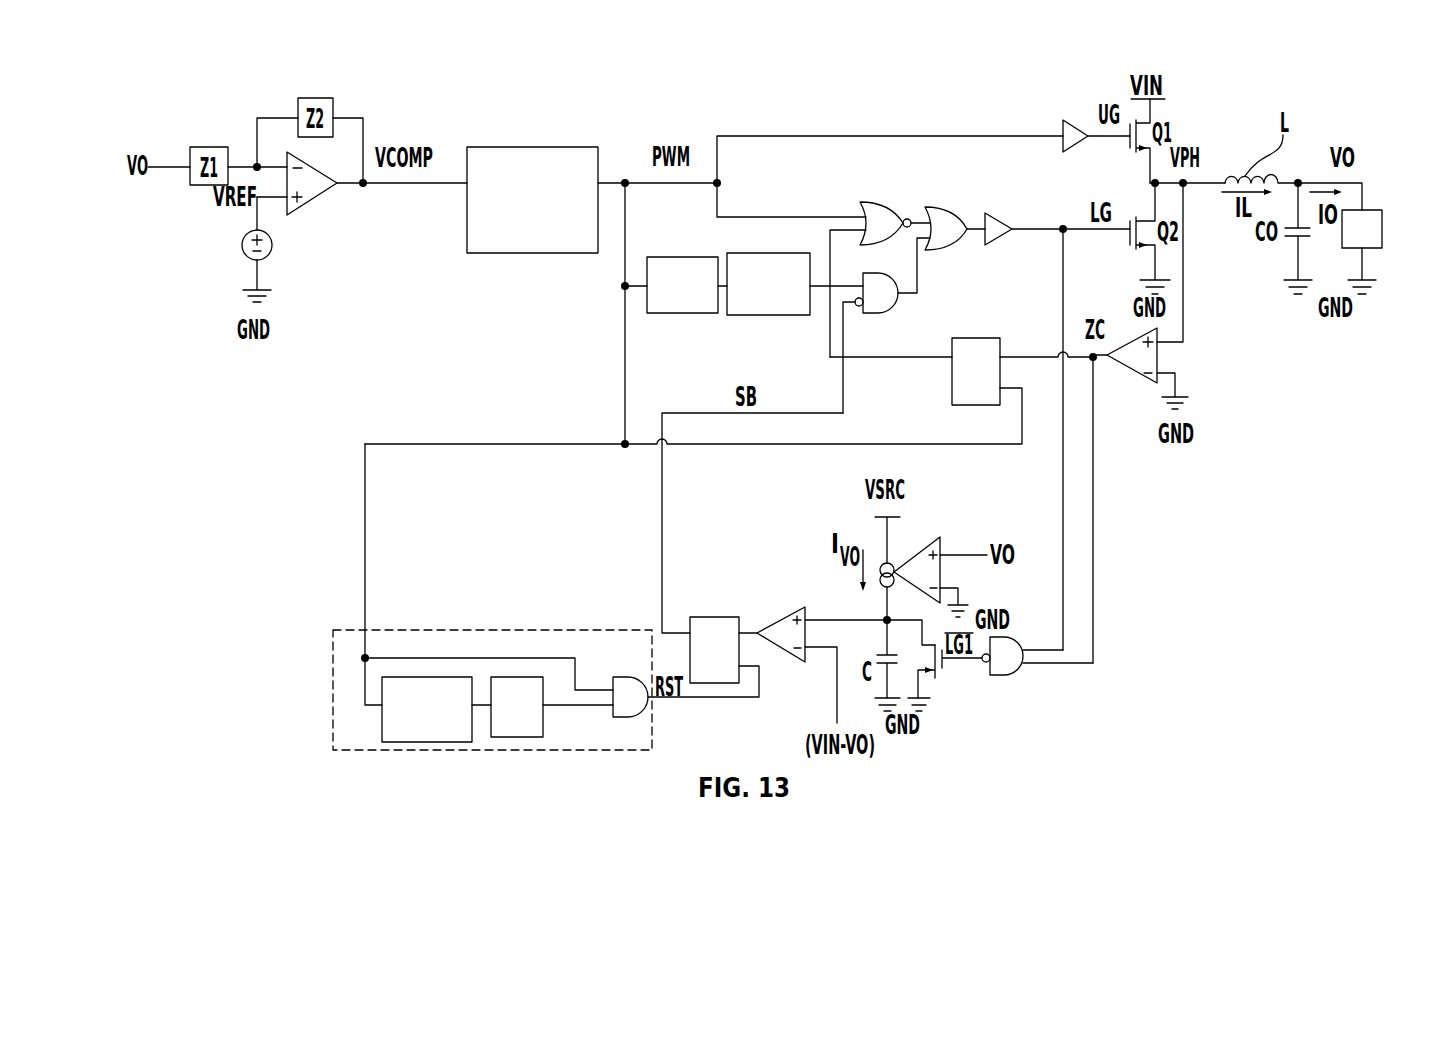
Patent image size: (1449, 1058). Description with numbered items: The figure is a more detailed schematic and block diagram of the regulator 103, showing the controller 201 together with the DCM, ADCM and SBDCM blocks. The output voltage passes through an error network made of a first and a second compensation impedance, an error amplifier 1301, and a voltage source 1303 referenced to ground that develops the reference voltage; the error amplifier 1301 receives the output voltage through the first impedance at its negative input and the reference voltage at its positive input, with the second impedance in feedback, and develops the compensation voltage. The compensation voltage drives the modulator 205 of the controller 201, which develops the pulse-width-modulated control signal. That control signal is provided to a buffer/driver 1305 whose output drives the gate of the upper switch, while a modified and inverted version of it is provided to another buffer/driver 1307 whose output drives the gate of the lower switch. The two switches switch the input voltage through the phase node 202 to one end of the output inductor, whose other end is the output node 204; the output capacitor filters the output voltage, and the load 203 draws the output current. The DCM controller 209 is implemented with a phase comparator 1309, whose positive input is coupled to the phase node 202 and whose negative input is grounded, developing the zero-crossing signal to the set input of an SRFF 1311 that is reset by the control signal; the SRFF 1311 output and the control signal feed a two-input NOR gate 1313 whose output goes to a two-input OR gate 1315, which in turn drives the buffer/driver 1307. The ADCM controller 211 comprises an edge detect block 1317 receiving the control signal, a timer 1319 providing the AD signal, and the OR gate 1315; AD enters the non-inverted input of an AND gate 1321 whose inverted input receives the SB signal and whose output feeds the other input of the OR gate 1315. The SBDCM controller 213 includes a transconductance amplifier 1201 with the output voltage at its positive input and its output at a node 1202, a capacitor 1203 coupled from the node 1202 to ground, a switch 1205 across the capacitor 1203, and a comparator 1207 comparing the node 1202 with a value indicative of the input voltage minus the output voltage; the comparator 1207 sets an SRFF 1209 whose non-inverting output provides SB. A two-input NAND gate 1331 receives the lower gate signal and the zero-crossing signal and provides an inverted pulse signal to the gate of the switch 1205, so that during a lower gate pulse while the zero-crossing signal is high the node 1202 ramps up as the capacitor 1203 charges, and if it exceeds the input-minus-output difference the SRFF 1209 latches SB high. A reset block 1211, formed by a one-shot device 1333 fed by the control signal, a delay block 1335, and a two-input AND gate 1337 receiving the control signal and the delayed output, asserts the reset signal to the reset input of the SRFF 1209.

The regulator 103 is at (803, 81).
The controller 201 is at (272, 428).
The phase node 202 is at (1151, 183).
The load 203 is at (1380, 210).
The output node 204 is at (1298, 180).
The modulator 205 is at (546, 224).
The DCM controller 209 is at (1025, 311).
The ADCM controller 211 is at (745, 352).
The SBDCM controller 213 is at (768, 541).
The transconductance amplifier 1201 is at (922, 548).
The node 1202 is at (885, 618).
The capacitor 1203 is at (881, 654).
The switch 1205 is at (946, 664).
The comparator 1207 is at (787, 616).
The set-reset flip-flop 1209 is at (718, 617).
The reset block 1211 is at (527, 750).
The error amplifier 1301 is at (315, 197).
The voltage source 1303 is at (272, 250).
The buffer/driver 1305 is at (1066, 120).
The buffer/driver 1307 is at (992, 215).
The phase comparator 1309 is at (1128, 370).
The SRFF 1311 is at (975, 338).
The NOR gate 1313 is at (878, 202).
The OR gate 1315 is at (935, 207).
The edge detect block 1317 is at (680, 257).
The timer 1319 is at (771, 253).
The AND gate 1321 is at (885, 313).
The NAND gate 1331 is at (1018, 674).
The 1-shot device 1333 is at (407, 677).
The delay block 1335 is at (500, 677).
The AND gate 1337 is at (645, 717).